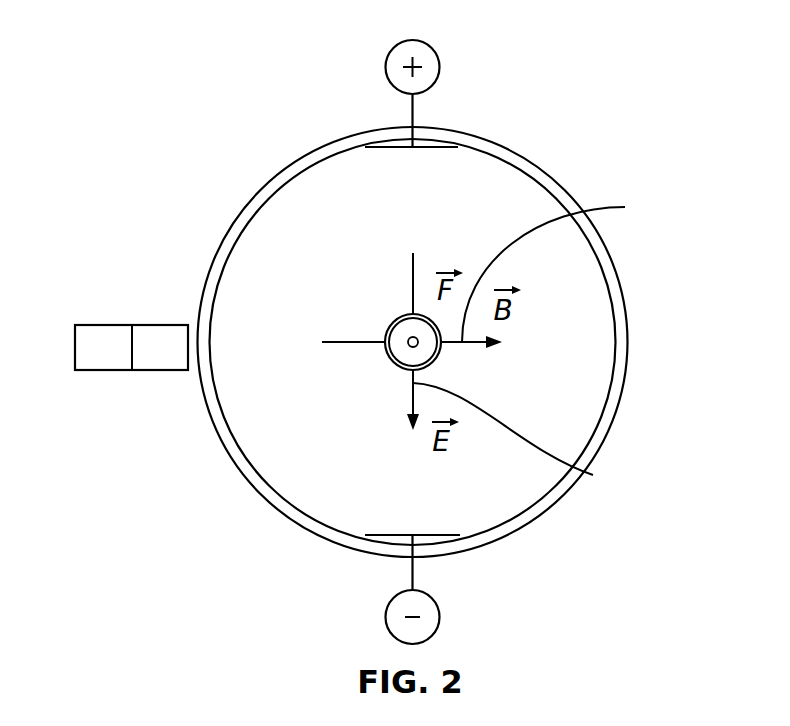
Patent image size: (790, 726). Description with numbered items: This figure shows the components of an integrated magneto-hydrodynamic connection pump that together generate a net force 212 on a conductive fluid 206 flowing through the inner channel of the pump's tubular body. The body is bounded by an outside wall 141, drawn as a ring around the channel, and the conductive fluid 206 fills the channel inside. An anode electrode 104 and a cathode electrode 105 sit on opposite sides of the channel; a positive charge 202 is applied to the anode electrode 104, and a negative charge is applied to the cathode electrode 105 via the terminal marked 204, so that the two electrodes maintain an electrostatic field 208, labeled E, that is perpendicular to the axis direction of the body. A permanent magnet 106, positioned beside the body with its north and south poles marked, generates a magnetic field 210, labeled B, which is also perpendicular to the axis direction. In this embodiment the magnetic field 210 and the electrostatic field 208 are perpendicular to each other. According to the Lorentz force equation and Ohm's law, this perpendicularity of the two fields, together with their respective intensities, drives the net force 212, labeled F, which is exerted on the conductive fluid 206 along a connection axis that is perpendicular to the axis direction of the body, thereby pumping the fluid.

The anode electrode 104 is at (375, 147).
The cathode electrode 105 is at (373, 540).
The permanent magnet 106 is at (130, 325).
The outside wall 141 is at (225, 232).
The positive charge 202 is at (437, 52).
The negative terminal of power source 204 is at (440, 617).
The conductive fluid 206 is at (290, 465).
The electrostatic field 208 is at (526, 438).
The magnetic field 210 is at (565, 266).
The net force 212 is at (387, 330).